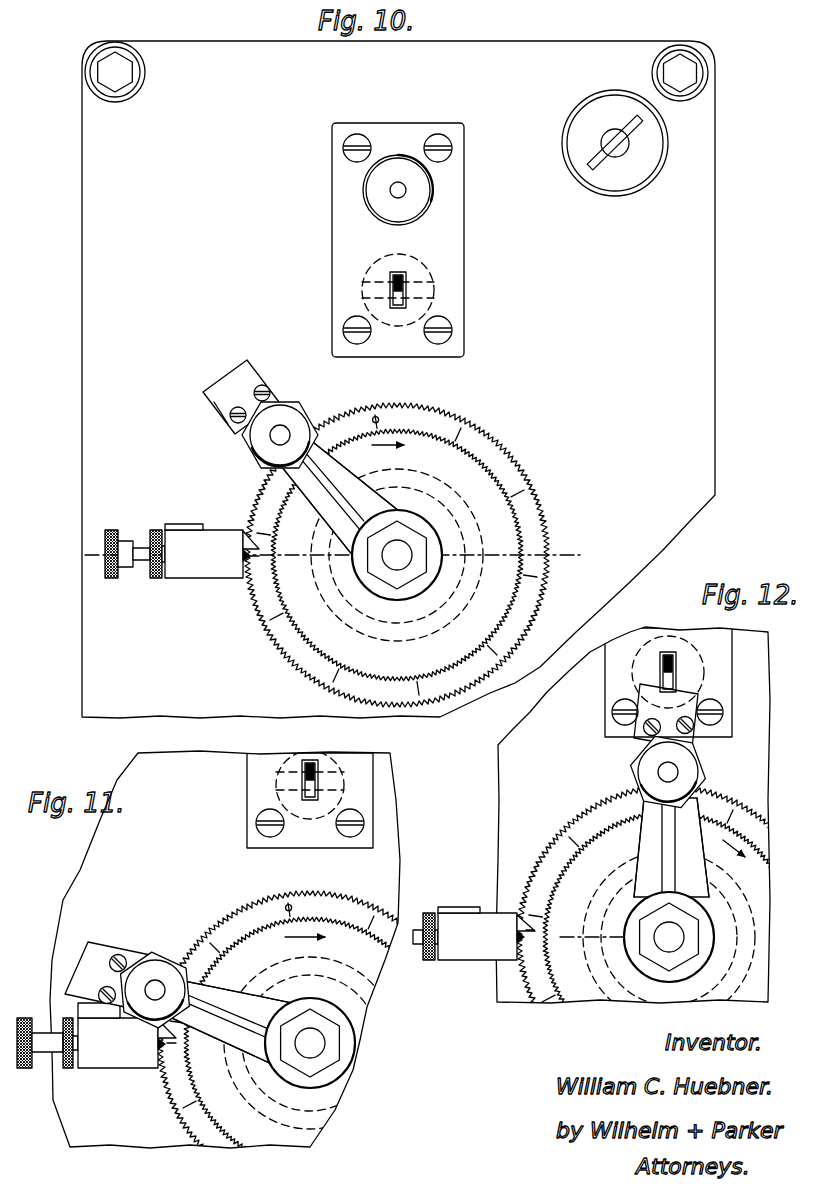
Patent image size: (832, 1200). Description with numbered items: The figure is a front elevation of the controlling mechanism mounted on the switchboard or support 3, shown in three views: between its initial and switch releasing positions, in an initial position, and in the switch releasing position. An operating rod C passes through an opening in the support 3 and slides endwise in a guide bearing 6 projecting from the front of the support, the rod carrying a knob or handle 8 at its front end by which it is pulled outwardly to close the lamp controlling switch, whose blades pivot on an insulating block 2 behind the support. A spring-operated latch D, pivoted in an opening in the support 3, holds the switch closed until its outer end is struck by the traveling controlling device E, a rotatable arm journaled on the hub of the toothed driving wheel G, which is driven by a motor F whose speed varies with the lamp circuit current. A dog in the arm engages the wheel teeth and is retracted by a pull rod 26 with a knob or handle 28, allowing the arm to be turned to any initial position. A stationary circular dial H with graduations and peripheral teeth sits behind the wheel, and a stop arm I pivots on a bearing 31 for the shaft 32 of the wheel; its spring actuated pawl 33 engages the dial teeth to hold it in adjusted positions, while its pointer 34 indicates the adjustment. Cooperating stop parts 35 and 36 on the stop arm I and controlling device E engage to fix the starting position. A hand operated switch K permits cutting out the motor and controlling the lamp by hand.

In FIG. 10, the insulating block 2 is at (258, 556).
In FIG. 11, the insulating block 2 is at (175, 1043).
In FIG. 12, the insulating block 2 is at (534, 930).
In FIG. 10, the switchboard or support 3 is at (398, 379).
In FIG. 11, the switchboard or support 3 is at (225, 949).
In FIG. 12, the switchboard or support 3 is at (633, 815).
In FIG. 10, the guide bearing 6 is at (398, 240).
In FIG. 11, the guide bearing 6 is at (310, 800).
In FIG. 12, the guide bearing 6 is at (668, 682).
In FIG. 10, the knob or handle 8 is at (389, 207).
In FIG. 10, the pull rod 26 is at (276, 440).
In FIG. 11, the pull rod 26 is at (158, 980).
In FIG. 12, the pull rod 26 is at (660, 773).
In FIG. 10, the knob or handle 28 is at (280, 435).
In FIG. 11, the knob or handle 28 is at (155, 990).
In FIG. 12, the knob or handle 28 is at (668, 771).
In FIG. 10, the bearing 31 is at (456, 594).
In FIG. 11, the bearing 31 is at (347, 972).
In FIG. 12, the bearing 31 is at (626, 984).
In FIG. 10, the shaft 32 is at (394, 565).
In FIG. 11, the shaft 32 is at (308, 1060).
In FIG. 12, the shaft 32 is at (666, 938).
In FIG. 10, the spring actuated pawl 33 is at (204, 556).
In FIG. 11, the spring actuated pawl 33 is at (118, 1043).
In FIG. 12, the spring actuated pawl 33 is at (477, 936).
In FIG. 10, the pointer 34 is at (252, 532).
In FIG. 11, the pointer 34 is at (167, 1034).
In FIG. 12, the pointer 34 is at (528, 908).
In FIG. 10, the stop part 35 is at (186, 525).
In FIG. 11, the stop part 35 is at (78, 1007).
In FIG. 12, the stop part 35 is at (466, 900).
In FIG. 10, the stop part 36 is at (214, 424).
In FIG. 11, the stop part 36 is at (90, 992).
In FIG. 12, the stop part 36 is at (640, 728).
In FIG. 10, the operating rod C is at (390, 190).
In FIG. 10, the spring-operated latch D is at (402, 288).
In FIG. 11, the spring-operated latch D is at (310, 805).
In FIG. 12, the spring-operated latch D is at (677, 676).
In FIG. 10, the traveling controlling device E is at (293, 396).
In FIG. 11, the traveling controlling device E is at (208, 993).
In FIG. 12, the traveling controlling device E is at (656, 822).
In FIG. 10, the motor F is at (185, 580).
In FIG. 11, the motor F is at (47, 1043).
In FIG. 12, the motor F is at (425, 936).
In FIG. 10, the driving wheel G is at (460, 483).
In FIG. 11, the driving wheel G is at (254, 953).
In FIG. 12, the driving wheel G is at (610, 859).
In FIG. 10, the circular dial H is at (466, 420).
In FIG. 11, the circular dial H is at (252, 912).
In FIG. 12, the circular dial H is at (572, 826).
In FIG. 10, the stop arm I is at (205, 545).
In FIG. 11, the stop arm I is at (107, 1041).
In FIG. 12, the stop arm I is at (459, 933).
In FIG. 10, the hand operated switch K is at (624, 146).